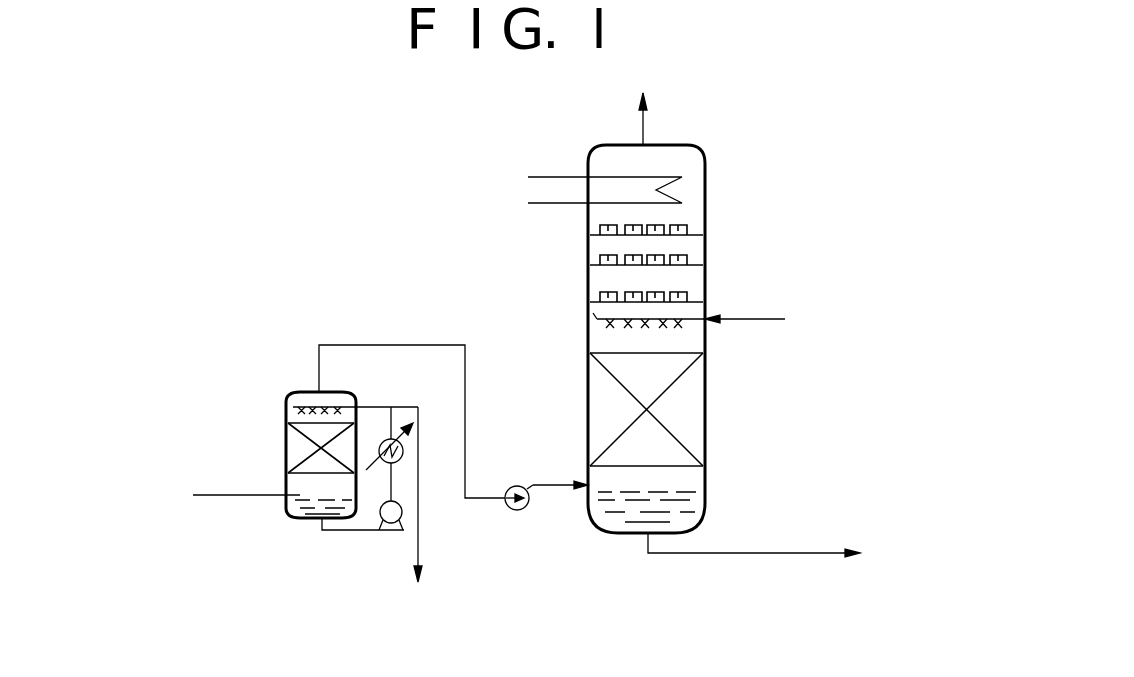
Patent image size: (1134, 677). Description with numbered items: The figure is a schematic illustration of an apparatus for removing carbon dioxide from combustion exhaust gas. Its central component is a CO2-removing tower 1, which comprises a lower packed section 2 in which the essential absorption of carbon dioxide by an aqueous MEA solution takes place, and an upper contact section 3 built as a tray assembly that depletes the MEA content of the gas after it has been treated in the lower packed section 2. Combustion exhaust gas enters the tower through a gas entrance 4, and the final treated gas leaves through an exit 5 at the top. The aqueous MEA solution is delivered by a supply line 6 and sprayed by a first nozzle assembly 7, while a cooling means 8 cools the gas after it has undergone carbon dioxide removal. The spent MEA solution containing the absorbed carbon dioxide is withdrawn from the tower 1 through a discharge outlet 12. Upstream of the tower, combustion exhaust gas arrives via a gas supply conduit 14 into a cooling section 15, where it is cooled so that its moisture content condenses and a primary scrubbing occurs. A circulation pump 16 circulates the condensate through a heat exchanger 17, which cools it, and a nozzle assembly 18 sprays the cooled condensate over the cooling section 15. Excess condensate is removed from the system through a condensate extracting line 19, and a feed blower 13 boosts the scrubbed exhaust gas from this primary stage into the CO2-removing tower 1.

The CO2-removing tower 1 is at (709, 199).
The lower packed section 2 is at (708, 428).
The upper contact section 3 is at (714, 225).
The gas entrance 4 is at (587, 488).
The exit of the final treated gas 5 is at (643, 124).
The supply line 6 is at (761, 321).
The first nozzle assembly 7 is at (598, 315).
The cooling means 8 is at (548, 176).
The discharge outlet 12 is at (652, 536).
The feed blower 13 is at (512, 486).
The gas supply conduit 14 is at (284, 500).
The cooling section 15 is at (283, 437).
The circulation pump 16 is at (392, 530).
The heat exchanger 17 is at (393, 440).
The nozzle assembly 18 is at (306, 405).
The condensate extracting line 19 is at (421, 541).